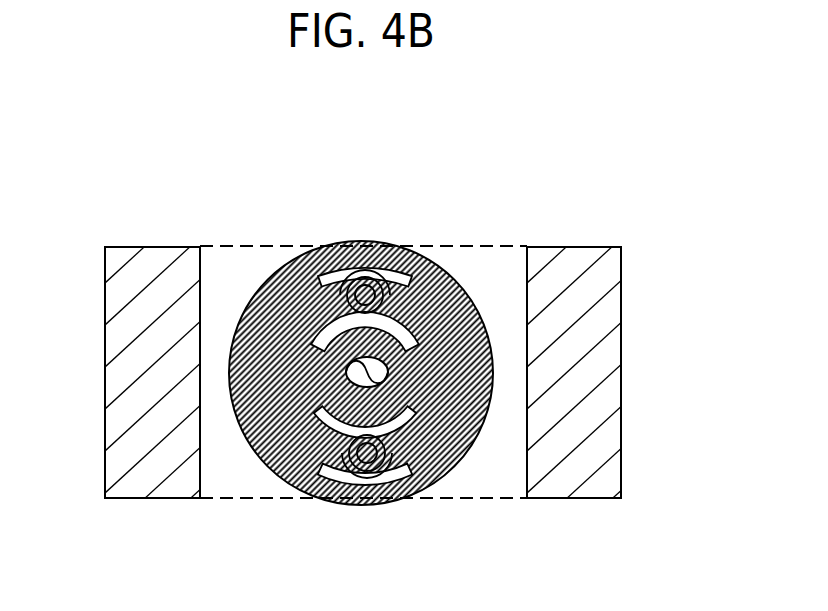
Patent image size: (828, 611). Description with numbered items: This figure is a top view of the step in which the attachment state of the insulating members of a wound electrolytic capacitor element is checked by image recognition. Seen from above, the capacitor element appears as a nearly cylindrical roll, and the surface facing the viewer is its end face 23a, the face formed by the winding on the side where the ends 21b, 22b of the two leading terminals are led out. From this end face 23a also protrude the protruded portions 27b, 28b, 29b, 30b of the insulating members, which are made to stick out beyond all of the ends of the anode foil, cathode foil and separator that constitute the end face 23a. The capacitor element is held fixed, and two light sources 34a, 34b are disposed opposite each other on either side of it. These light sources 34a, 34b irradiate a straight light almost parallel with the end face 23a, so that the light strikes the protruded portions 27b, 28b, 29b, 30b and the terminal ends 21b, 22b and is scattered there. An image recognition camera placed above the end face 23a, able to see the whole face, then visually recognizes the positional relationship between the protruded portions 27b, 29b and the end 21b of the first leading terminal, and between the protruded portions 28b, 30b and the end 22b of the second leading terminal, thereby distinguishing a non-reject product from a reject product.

The end face 23a is at (268, 342).
The end of leading terminal 22b is at (358, 285).
The protruded portion 30b is at (400, 262).
The protruded portion 28b is at (442, 275).
The end of leading terminal 21b is at (340, 485).
The protruded portion 29b is at (388, 487).
The protruded portion 27b is at (430, 465).
The light source 34a is at (140, 375).
The light source 34b is at (592, 365).